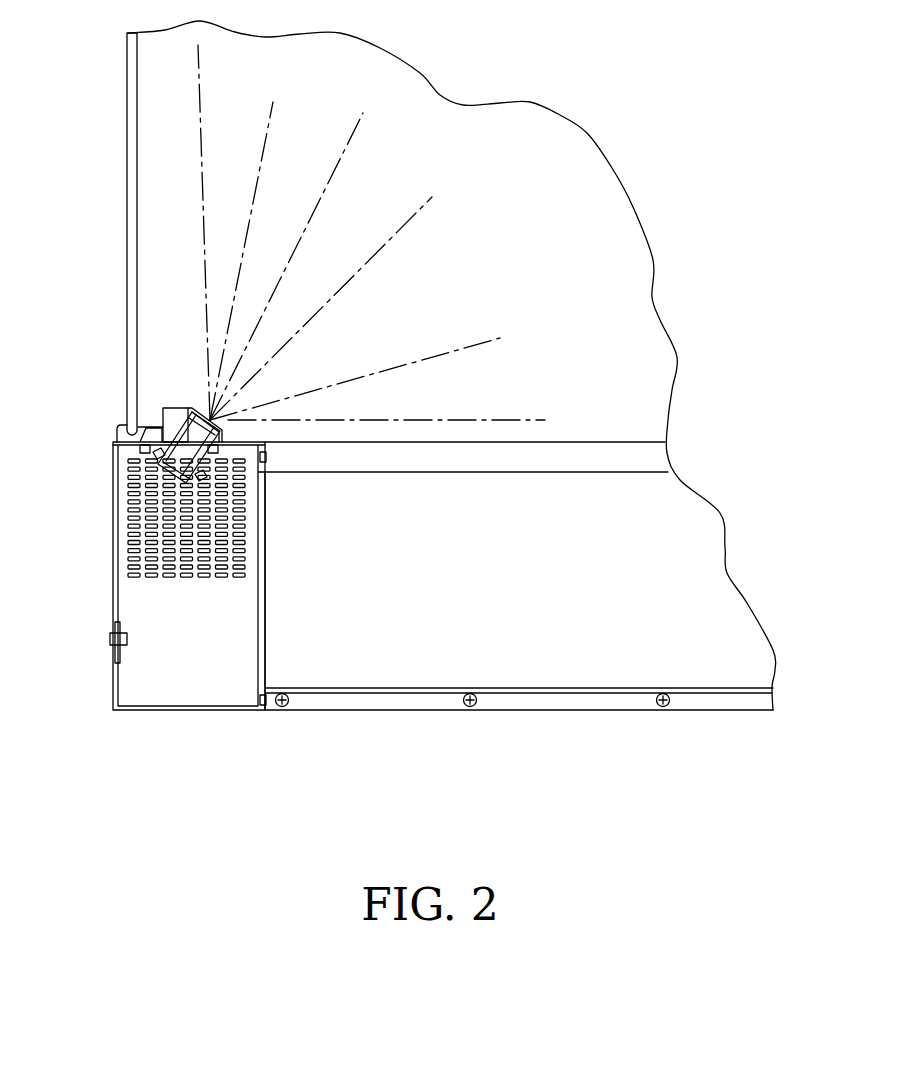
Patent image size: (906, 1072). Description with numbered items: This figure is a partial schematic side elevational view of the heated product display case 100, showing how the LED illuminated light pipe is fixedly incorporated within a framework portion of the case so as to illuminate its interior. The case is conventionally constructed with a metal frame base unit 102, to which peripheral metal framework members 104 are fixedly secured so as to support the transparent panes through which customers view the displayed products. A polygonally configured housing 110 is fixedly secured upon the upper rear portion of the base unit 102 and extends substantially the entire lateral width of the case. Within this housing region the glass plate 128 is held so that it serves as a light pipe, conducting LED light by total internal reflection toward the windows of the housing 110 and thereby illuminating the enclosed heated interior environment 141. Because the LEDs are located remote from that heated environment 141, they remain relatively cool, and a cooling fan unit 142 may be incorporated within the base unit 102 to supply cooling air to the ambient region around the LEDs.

The heated product display case 100 is at (627, 128).
The metal frame base unit 102 is at (585, 650).
The peripheral metal framework member 104 is at (133, 130).
The polygonally configured housing 110 is at (196, 443).
The glass plate 128 is at (185, 455).
The enclosed heated interior environment 141 is at (497, 271).
The cooling fan unit 142 is at (185, 547).